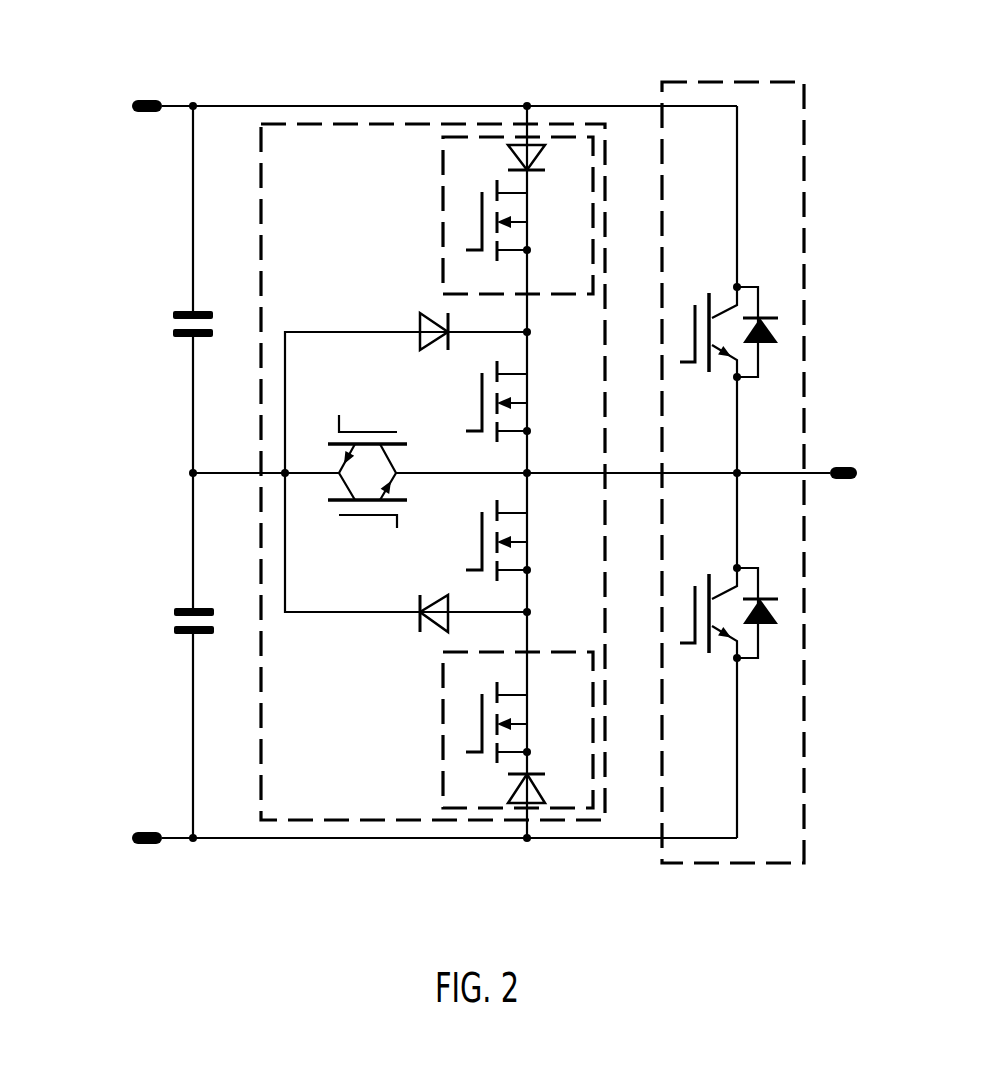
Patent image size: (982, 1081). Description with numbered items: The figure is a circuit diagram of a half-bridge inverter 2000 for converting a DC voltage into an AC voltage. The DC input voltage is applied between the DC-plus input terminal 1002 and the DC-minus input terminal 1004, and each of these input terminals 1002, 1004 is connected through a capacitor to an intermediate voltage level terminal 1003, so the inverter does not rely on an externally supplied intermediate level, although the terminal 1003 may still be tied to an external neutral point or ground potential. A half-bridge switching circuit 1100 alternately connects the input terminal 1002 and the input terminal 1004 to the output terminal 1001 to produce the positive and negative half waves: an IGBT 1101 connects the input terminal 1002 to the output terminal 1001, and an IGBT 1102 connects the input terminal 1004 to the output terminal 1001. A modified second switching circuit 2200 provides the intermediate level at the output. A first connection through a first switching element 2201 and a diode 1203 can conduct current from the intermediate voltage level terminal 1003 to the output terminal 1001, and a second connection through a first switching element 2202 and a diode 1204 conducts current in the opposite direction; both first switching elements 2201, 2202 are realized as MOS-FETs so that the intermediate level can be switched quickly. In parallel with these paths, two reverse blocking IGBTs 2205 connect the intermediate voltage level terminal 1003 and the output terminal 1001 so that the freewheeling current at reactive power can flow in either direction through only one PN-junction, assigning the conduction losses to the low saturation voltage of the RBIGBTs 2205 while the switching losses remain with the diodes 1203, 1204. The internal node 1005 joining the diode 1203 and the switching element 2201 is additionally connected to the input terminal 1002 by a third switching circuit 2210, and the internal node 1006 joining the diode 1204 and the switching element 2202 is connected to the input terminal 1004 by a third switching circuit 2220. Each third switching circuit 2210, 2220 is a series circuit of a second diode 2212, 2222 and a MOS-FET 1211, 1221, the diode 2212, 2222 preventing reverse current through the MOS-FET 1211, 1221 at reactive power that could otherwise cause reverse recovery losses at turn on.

The power converter circuit arrangement 2000 is at (833, 57).
The output terminal 1001 is at (843, 463).
The DC+ input terminal 1002 is at (132, 106).
The intermediate voltage level terminal 1003 is at (193, 473).
The DC− input terminal 1004 is at (132, 838).
The internal node 1005 is at (530, 335).
The internal node 1006 is at (530, 615).
The half-bridge switching circuit 1100 is at (780, 865).
The insulated gate bipolar transistor 1101 is at (778, 328).
The insulated gate bipolar transistor 1102 is at (778, 609).
The diode 1203 is at (420, 318).
The diode 1204 is at (420, 618).
The MOS-FET 1211 is at (530, 200).
The MOS-FET 1221 is at (528, 742).
The second switching circuit 2200 is at (313, 822).
The first switching element 2201 is at (530, 394).
The first switching element 2202 is at (530, 536).
The reverse blocking insulated gate bipolar transistor 2205 is at (328, 488).
The third switching circuit 2210 is at (443, 180).
The second diode 2212 is at (508, 158).
The third switching circuit 2220 is at (443, 765).
The second diode 2222 is at (510, 782).